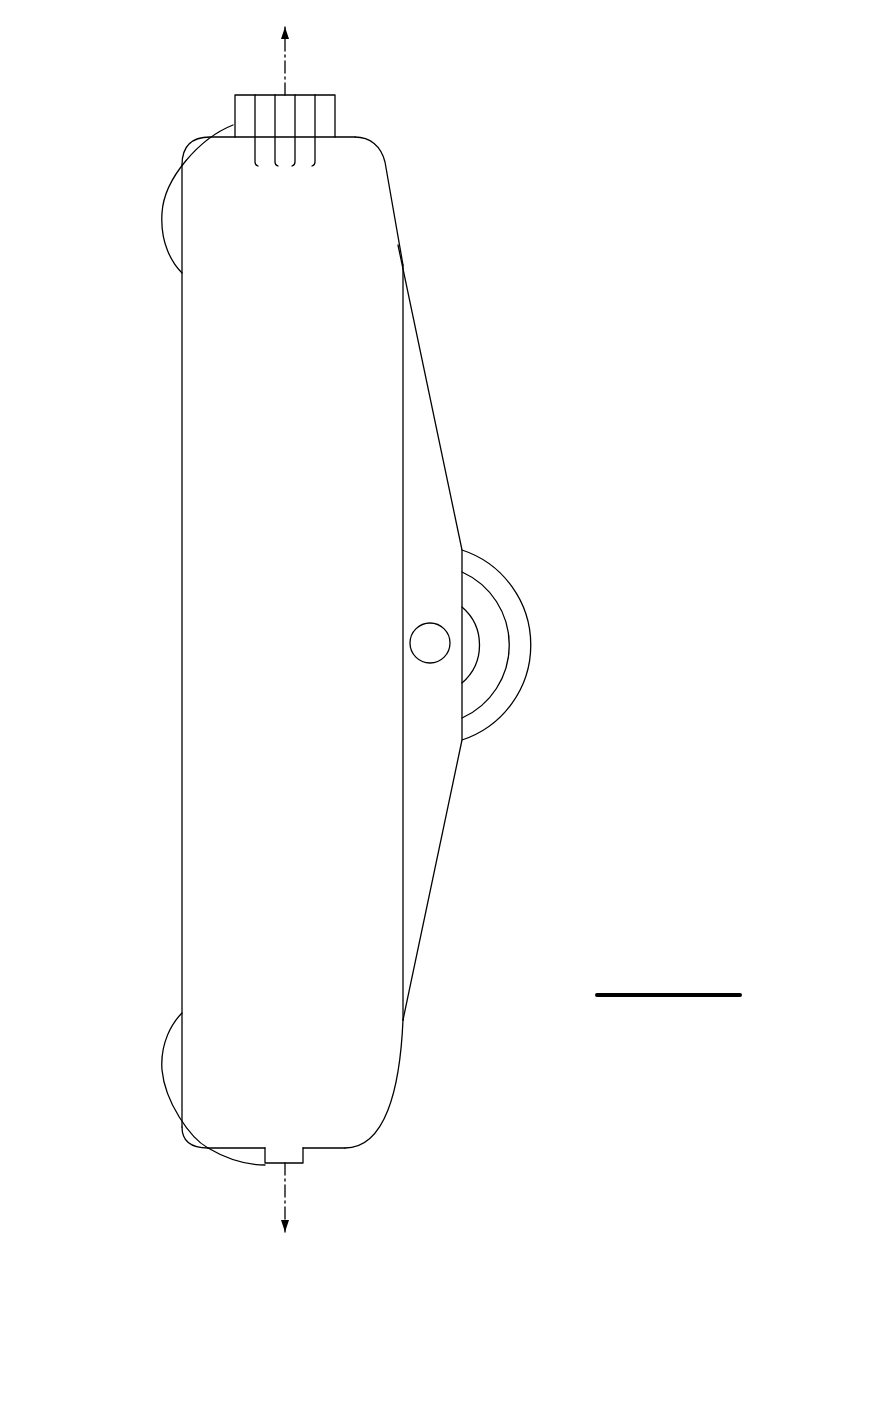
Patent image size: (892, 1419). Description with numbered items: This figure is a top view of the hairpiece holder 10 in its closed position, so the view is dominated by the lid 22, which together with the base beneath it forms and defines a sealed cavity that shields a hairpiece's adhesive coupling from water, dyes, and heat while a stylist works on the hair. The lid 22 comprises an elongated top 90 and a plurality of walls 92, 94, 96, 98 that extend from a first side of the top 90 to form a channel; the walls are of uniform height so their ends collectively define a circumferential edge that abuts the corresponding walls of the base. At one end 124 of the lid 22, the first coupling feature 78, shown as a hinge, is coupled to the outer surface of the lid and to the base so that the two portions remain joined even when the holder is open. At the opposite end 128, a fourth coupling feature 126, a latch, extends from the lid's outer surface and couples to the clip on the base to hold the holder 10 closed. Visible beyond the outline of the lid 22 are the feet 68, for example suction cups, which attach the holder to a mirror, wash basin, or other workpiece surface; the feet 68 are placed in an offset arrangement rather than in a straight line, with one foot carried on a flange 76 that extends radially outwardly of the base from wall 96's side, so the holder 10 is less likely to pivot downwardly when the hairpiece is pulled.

The hairpiece holder 10 is at (593, 295).
The lid 22 is at (235, 808).
The feet 68 is at (162, 212).
The flange 76 is at (428, 787).
The first coupling feature 78 is at (342, 115).
The elongated top 90 is at (223, 533).
The wall 92 is at (180, 605).
The wall 94 is at (355, 135).
The wall 96 is at (405, 478).
The wall 98 is at (332, 1152).
The end 124 is at (367, 172).
The fourth coupling feature 126 is at (302, 1167).
The end 128 is at (360, 1113).